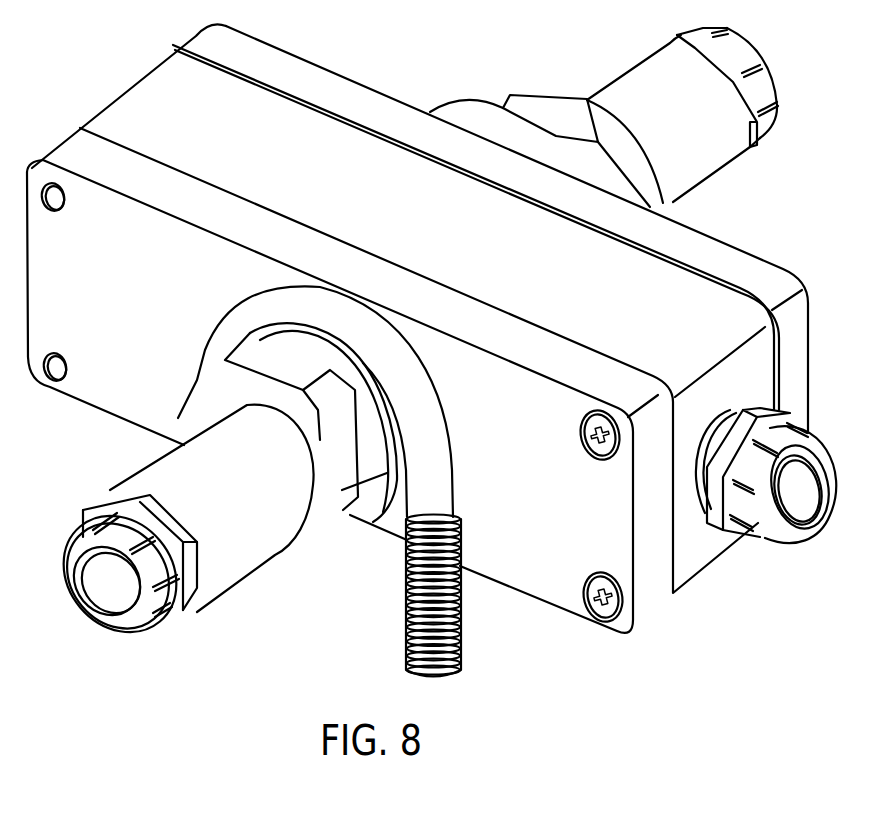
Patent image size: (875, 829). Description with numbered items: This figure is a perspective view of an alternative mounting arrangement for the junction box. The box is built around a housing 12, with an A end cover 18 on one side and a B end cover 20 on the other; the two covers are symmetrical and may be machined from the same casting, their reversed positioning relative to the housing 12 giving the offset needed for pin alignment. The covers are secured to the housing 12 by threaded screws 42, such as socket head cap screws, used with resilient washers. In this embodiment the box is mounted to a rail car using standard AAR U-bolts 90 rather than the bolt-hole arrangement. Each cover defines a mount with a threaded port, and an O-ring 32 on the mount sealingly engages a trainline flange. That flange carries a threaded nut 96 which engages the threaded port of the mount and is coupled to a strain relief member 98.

The housing 12 is at (147, 100).
The A end cover 18 is at (795, 312).
The B end cover 20 is at (68, 153).
The O-ring 32 is at (797, 523).
The threaded screws 42 is at (617, 610).
The U-bolts 90 is at (453, 117).
The threaded nut 96 is at (543, 108).
The strain relief member 98 is at (765, 85).